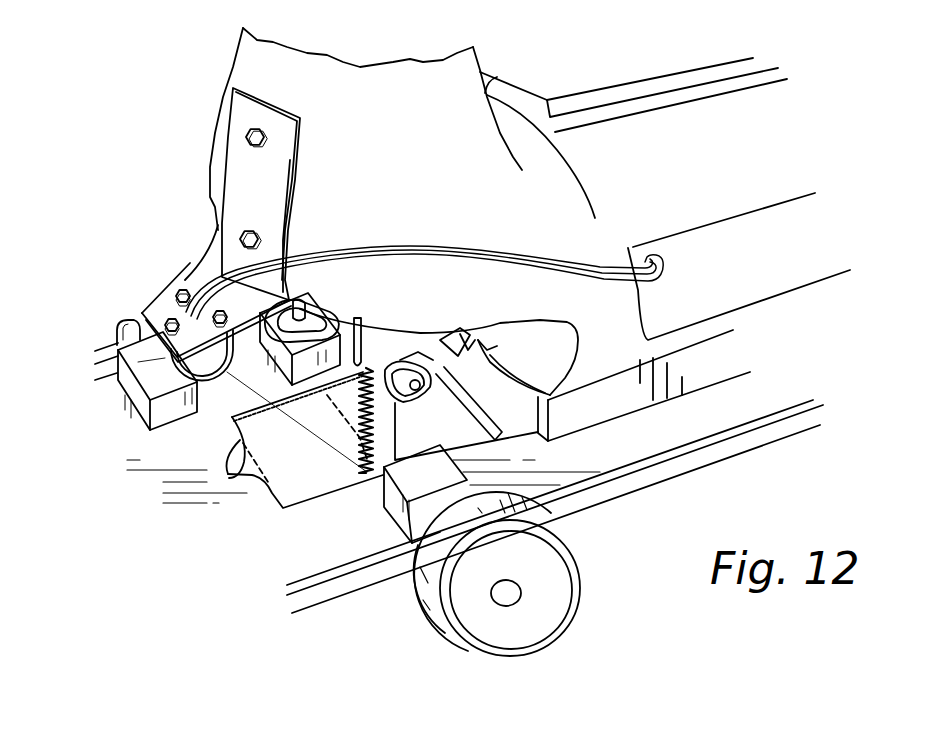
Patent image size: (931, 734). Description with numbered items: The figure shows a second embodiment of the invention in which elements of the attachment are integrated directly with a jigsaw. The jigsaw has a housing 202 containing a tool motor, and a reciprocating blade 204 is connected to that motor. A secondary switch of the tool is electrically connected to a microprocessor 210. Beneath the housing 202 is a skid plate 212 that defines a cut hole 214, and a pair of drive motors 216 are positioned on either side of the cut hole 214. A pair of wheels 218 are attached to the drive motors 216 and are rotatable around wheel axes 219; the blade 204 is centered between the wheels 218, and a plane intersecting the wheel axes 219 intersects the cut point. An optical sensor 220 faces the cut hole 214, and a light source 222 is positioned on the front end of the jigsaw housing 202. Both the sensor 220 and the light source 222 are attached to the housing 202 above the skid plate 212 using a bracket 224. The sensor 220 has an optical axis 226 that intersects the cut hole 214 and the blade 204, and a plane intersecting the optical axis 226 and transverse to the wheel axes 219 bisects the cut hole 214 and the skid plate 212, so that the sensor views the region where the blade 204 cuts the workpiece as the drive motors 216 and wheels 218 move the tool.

The housing 202 is at (257, 67).
The reciprocating blade 204 is at (390, 427).
The microprocessor 210 is at (472, 335).
The skid plate 212 is at (237, 558).
The cut hole 214 is at (305, 440).
The drive motors 216 is at (115, 385).
The wheels 218 is at (575, 607).
The wheel axes 219 is at (510, 596).
The optical sensor 220 is at (208, 376).
The light source 222 is at (300, 306).
The bracket 224 is at (221, 225).
The optical axis 226 is at (347, 462).